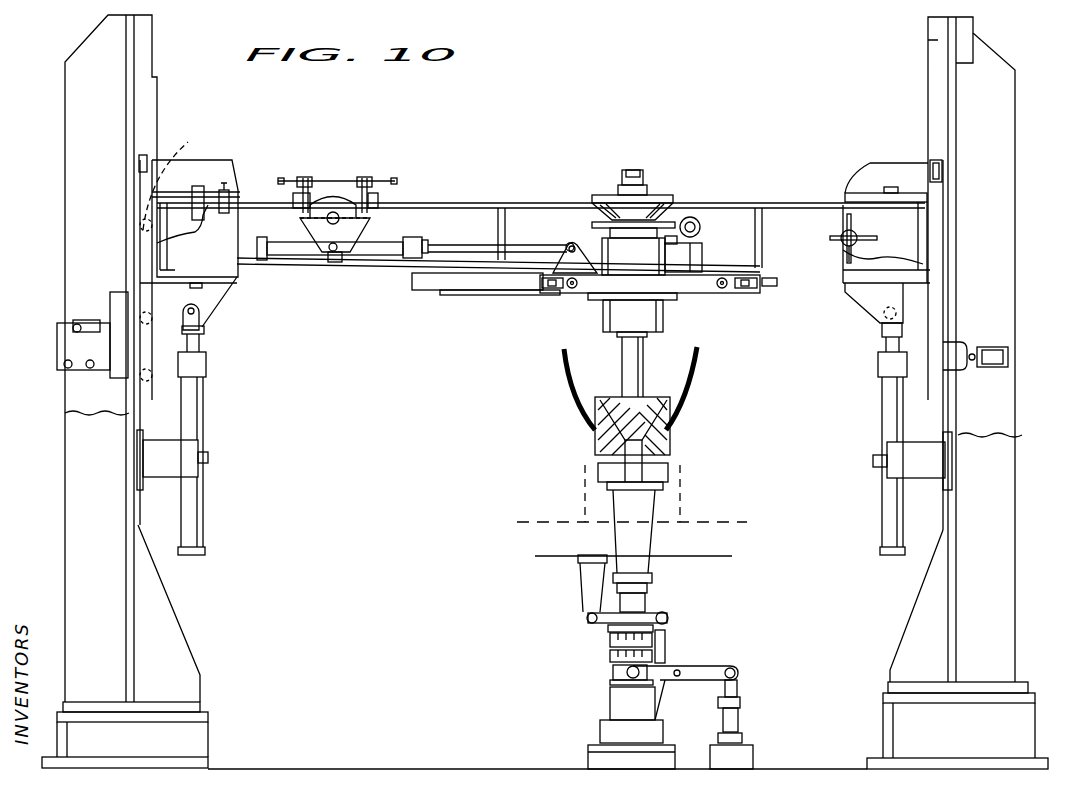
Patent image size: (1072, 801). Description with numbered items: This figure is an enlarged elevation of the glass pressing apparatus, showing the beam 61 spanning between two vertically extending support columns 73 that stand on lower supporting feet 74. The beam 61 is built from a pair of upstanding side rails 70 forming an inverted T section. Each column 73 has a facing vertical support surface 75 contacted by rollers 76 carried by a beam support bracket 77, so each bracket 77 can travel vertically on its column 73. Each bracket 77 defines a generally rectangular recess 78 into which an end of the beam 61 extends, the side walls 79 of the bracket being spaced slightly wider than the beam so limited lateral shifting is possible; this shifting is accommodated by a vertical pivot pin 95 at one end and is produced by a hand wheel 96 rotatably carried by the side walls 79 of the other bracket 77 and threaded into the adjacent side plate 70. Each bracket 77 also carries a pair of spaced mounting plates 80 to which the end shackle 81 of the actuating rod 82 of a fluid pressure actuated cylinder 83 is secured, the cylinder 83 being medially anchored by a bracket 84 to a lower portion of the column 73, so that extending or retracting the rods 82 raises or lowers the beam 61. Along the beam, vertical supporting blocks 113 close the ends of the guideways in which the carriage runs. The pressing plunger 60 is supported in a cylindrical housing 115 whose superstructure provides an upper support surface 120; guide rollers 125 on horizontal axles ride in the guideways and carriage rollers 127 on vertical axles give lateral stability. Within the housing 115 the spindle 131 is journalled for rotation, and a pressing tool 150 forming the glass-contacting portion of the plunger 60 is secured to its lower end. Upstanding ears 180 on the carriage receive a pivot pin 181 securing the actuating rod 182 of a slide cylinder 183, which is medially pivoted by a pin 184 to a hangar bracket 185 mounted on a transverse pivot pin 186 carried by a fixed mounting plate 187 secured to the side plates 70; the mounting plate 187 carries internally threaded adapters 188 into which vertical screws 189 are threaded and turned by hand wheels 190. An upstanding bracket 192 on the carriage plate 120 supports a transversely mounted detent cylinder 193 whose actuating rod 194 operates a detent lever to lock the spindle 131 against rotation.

The pressing plunger 60 is at (600, 315).
The beam 61 is at (455, 202).
The side rails 70 is at (523, 214).
The support column 73 is at (67, 270).
The supporting feet 74 is at (205, 712).
The support surfaces 75 is at (143, 105).
The rollers 76 is at (188, 142).
The beam support bracket 77 is at (203, 166).
The recess 78 is at (205, 192).
The side walls 79 is at (903, 236).
The mounting plates 80 is at (200, 316).
The end shackle 81 is at (197, 318).
The actuating rod 82 is at (200, 340).
The fluid pressure actuated cylinder 83 is at (195, 422).
The bracket 84 is at (190, 468).
The vertical pivot pin 95 is at (203, 224).
The hand wheel 96 is at (851, 243).
The vertical supporting blocks 113 is at (763, 283).
The cylindrical housing 115 is at (648, 326).
The upper support surface 120 is at (698, 260).
The guide rollers 125 is at (565, 292).
The carriage rollers 127 is at (545, 292).
The spindle 131 is at (647, 362).
The pressing tool 150 is at (658, 393).
The upstanding ears 180 is at (581, 262).
The clevis 181 is at (567, 242).
The actuating rod 182 is at (487, 245).
The slide cylinder 183 is at (296, 255).
The pin 184 is at (335, 262).
The hangar bracket 185 is at (353, 228).
The transverse pivot pin 186 is at (333, 212).
The mounting plate 187 is at (346, 193).
The internally threaded adapters 188 is at (378, 191).
The screws 189 is at (368, 177).
The hand wheels 190 is at (285, 180).
The upstanding bracket 192 is at (673, 226).
The detent cylinder 193 is at (702, 218).
The actuating rod 194 is at (699, 222).